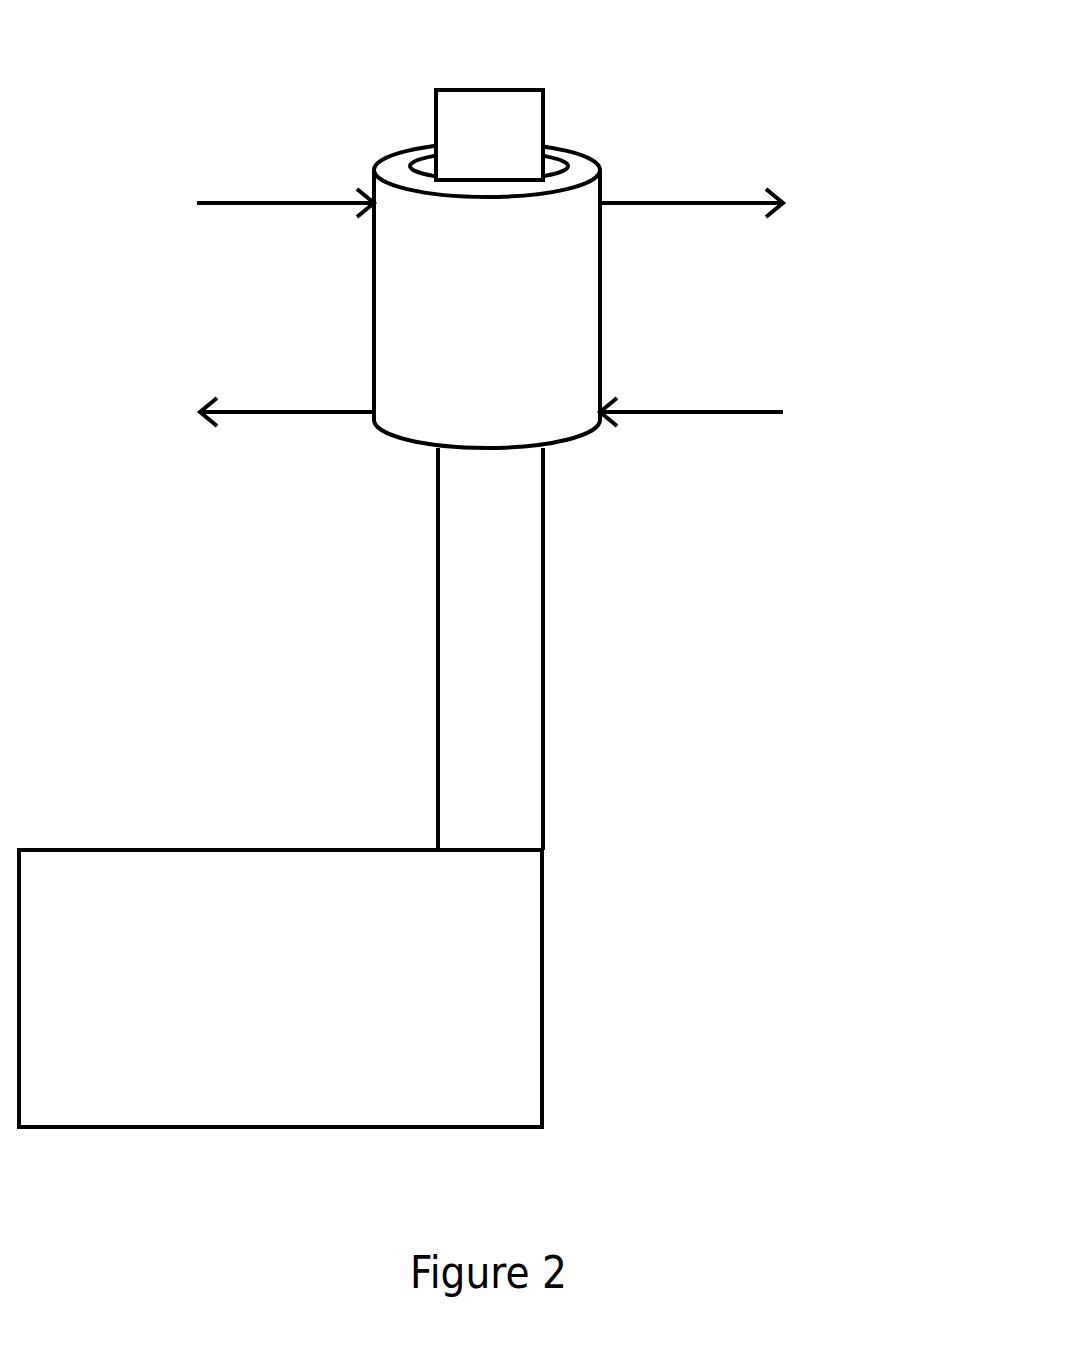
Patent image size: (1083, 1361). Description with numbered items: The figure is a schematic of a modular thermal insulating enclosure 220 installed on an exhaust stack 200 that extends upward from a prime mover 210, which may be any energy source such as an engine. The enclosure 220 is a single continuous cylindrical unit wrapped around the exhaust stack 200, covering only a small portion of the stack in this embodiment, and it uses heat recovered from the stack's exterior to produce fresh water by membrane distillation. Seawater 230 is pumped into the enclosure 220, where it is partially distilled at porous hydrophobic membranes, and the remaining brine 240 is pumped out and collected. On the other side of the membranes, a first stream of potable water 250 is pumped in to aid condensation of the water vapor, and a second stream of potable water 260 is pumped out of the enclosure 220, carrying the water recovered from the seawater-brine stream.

The exhaust stack 200 is at (633, 708).
The prime mover 210 is at (635, 1003).
The modular thermal insulating enclosure 220 is at (728, 297).
The seawater 230 is at (259, 96).
The brine 240 is at (678, 100).
The first stream of potable water 250 is at (693, 494).
The second stream of potable water 260 is at (268, 480).